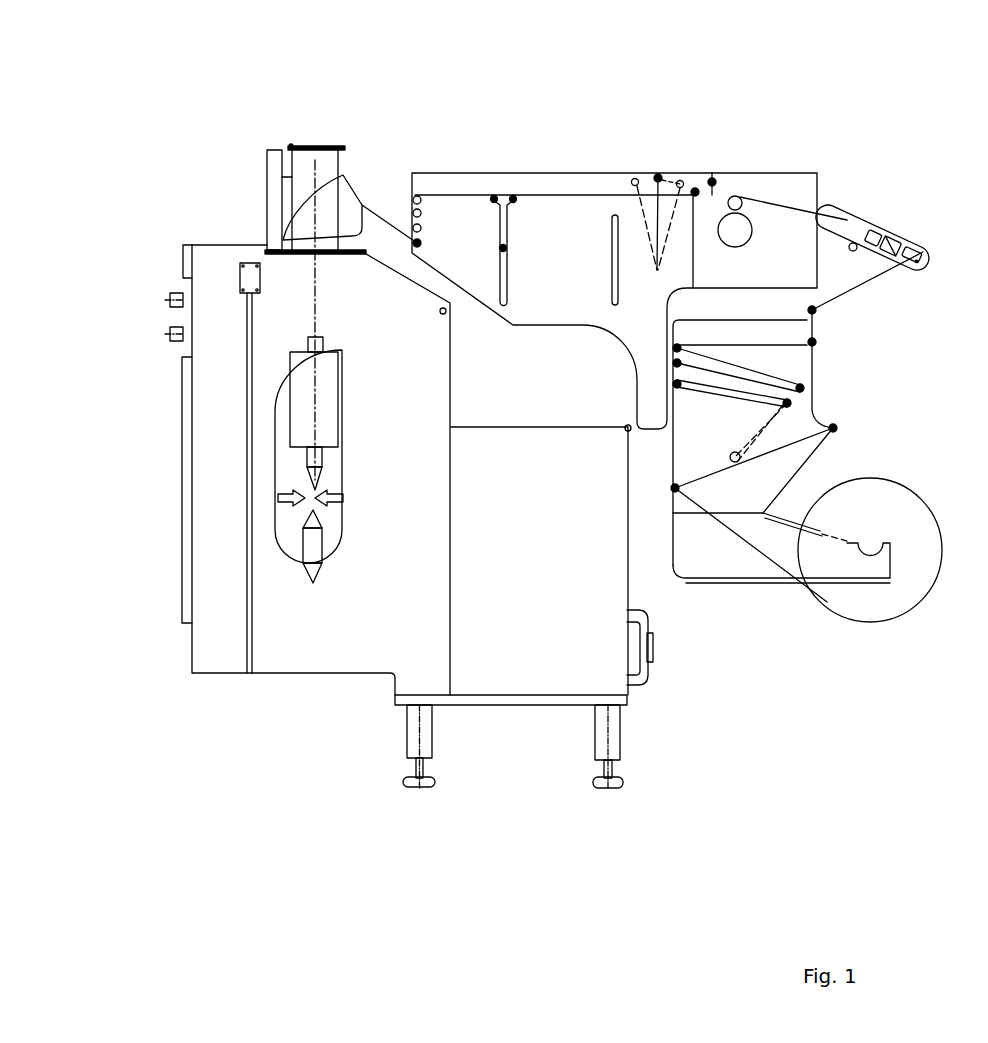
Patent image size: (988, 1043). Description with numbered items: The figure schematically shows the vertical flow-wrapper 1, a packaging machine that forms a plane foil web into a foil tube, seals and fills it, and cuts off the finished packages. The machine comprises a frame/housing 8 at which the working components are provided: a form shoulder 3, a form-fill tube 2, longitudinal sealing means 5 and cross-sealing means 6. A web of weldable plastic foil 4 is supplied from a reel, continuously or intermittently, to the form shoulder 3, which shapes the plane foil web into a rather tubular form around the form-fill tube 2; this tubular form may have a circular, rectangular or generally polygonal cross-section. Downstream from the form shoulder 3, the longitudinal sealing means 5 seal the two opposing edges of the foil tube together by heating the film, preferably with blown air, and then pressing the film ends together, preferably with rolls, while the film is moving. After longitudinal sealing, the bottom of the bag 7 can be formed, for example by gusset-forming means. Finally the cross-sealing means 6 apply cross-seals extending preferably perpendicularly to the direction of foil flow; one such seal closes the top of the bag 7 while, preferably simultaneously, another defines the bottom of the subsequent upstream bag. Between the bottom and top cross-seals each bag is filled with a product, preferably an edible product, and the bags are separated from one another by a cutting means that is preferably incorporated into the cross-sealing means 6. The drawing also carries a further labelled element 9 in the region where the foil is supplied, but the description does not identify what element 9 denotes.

The vertical flow-wrapper 1 is at (567, 127).
The form-fill tube 2 is at (298, 155).
The form shoulder 3 is at (325, 208).
The foil 4 is at (375, 210).
The longitudinal sealing means 5 is at (315, 397).
The cross-sealing means 6 is at (298, 498).
The bag 7 is at (313, 552).
The frame/housing 8 is at (488, 665).
The roll holder 9 is at (852, 597).